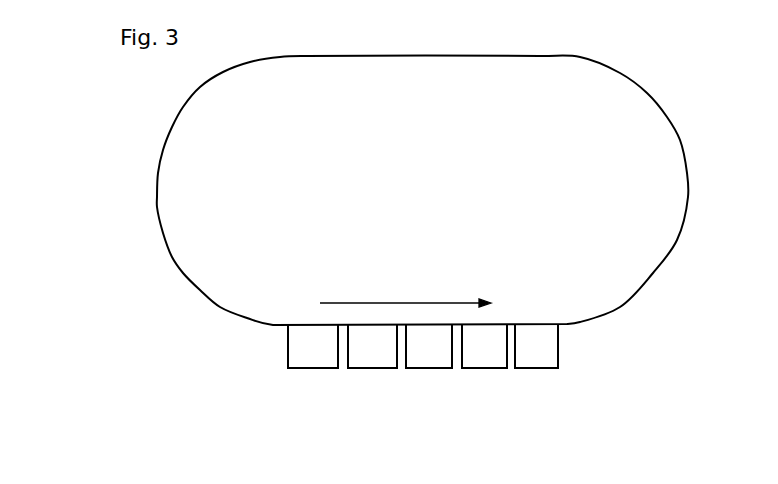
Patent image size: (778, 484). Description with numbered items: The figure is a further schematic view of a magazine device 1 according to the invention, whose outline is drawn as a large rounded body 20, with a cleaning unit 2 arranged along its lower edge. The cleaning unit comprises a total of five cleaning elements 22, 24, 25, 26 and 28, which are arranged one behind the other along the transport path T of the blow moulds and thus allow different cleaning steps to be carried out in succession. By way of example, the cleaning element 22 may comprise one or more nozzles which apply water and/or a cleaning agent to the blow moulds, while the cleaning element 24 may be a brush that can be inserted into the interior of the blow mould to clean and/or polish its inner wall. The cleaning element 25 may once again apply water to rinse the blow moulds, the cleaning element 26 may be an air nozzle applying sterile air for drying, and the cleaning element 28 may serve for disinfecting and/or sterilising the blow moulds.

The magazine device 1 is at (147, 141).
The housing 20 is at (203, 222).
The sensor arrangement 2 is at (567, 343).
The cleaning element 22 is at (322, 350).
The cleaning element 24 is at (378, 352).
The cleaning element 25 is at (435, 350).
The cleaning element 26 is at (483, 352).
The cleaning element 28 is at (543, 350).